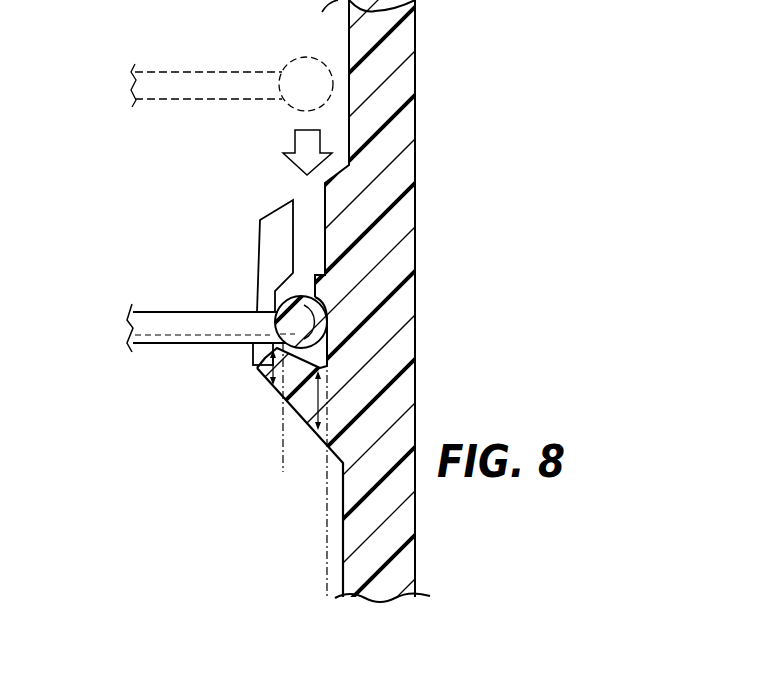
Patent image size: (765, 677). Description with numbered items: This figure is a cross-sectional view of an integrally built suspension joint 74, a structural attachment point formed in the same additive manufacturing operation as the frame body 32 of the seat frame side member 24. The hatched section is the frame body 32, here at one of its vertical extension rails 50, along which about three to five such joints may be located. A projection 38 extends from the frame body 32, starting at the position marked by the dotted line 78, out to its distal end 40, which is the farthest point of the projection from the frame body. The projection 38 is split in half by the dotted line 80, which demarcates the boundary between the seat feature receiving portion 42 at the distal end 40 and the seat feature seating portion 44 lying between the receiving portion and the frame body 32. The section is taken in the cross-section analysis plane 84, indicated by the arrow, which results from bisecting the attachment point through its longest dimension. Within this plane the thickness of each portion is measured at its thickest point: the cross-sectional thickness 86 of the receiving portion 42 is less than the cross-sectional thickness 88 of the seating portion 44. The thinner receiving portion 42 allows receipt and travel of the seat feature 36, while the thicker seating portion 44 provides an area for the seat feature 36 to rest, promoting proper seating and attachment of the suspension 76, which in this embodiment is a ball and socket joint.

The seat frame side member 24 is at (410, 130).
The frame body 32 is at (405, 43).
The vertical extension rail 50 is at (415, 73).
The seat feature 36 is at (155, 312).
The projection 38 is at (258, 347).
The distal end 40 is at (252, 310).
The seat feature receiving portion 42 is at (273, 220).
The seat feature seating portion 44 is at (305, 416).
The suspension joint 74 is at (257, 368).
The suspension 76 is at (208, 312).
The dotted line 78 is at (327, 563).
The dotted line 80 is at (283, 448).
The cross-section analysis plane 84 is at (118, 147).
The cross-sectional thickness 86 is at (266, 364).
The cross-sectional thickness 88 is at (322, 399).